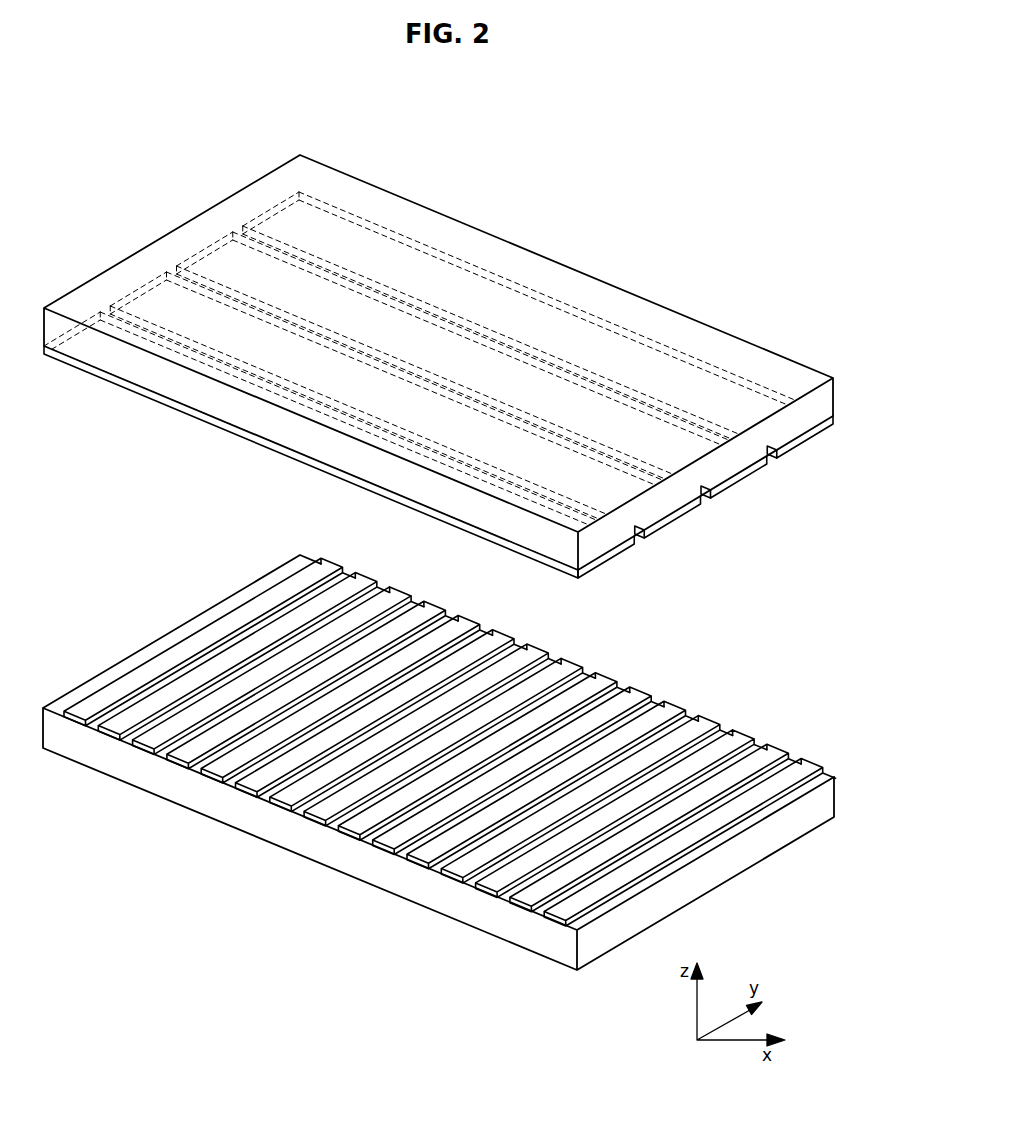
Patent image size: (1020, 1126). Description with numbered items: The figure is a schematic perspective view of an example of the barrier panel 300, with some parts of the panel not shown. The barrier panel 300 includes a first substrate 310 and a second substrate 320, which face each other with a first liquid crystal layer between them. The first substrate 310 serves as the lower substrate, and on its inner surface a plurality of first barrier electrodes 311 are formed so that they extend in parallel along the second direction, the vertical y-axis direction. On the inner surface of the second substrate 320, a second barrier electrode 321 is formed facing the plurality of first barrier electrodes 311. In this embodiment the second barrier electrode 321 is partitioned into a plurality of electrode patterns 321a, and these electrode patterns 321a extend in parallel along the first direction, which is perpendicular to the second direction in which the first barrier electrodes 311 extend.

The barrier panel 300 is at (473, 609).
The first substrate 310 is at (439, 762).
The first barrier electrodes 311 is at (265, 805).
The second substrate 320 is at (474, 375).
The second barrier electrode 321 is at (451, 470).
The electrode patterns 321a is at (778, 458).